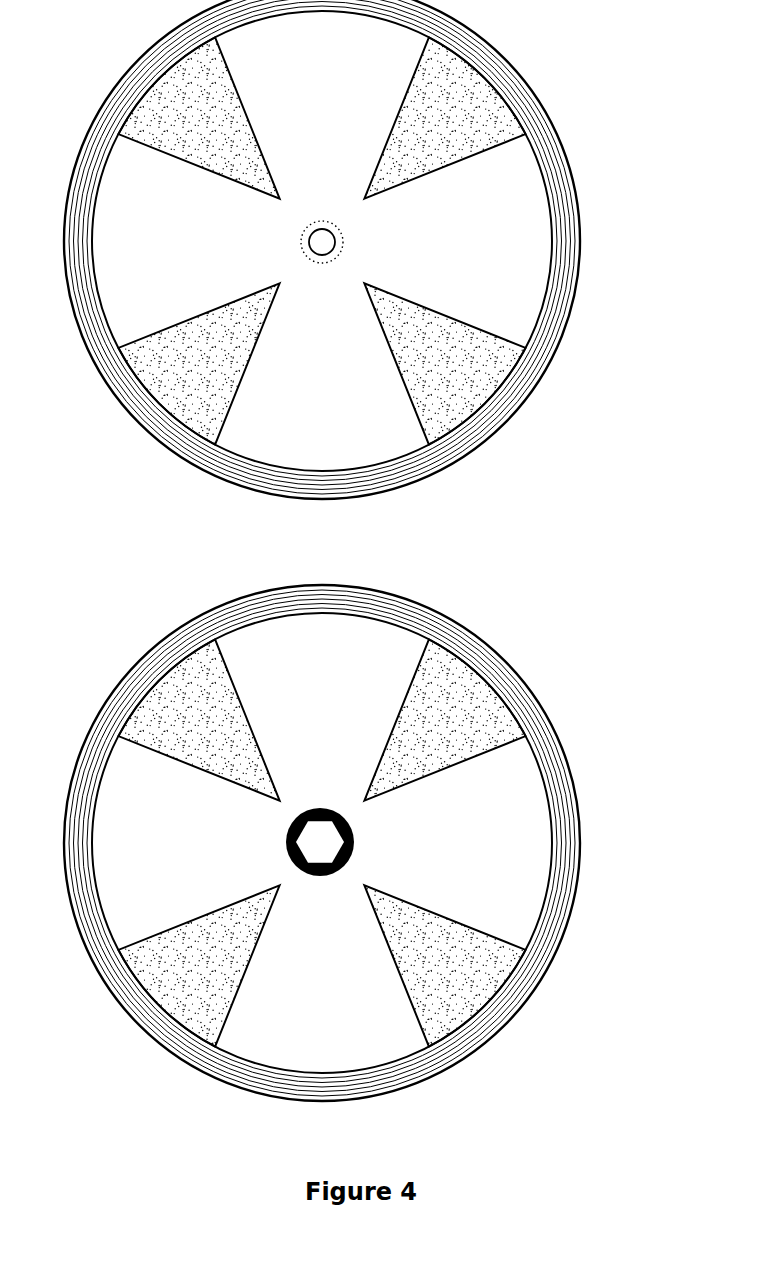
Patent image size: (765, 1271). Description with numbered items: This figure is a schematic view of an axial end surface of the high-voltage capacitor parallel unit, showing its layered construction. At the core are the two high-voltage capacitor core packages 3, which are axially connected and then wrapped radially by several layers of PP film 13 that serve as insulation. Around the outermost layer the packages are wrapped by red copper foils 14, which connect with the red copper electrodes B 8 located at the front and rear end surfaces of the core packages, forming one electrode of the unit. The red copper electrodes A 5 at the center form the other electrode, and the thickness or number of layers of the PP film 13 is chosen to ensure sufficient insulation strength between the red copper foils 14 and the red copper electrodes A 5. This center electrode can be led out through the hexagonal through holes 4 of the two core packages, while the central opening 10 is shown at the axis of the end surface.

The high-voltage capacitor core package 3 is at (202, 380).
The hexagonal through hole 4 is at (330, 847).
The red copper electrode A 5 is at (509, 250).
The red copper electrode B 8 is at (510, 840).
The central hole 10 is at (322, 242).
The PP film 13 is at (440, 453).
The red copper foil 14 is at (507, 415).